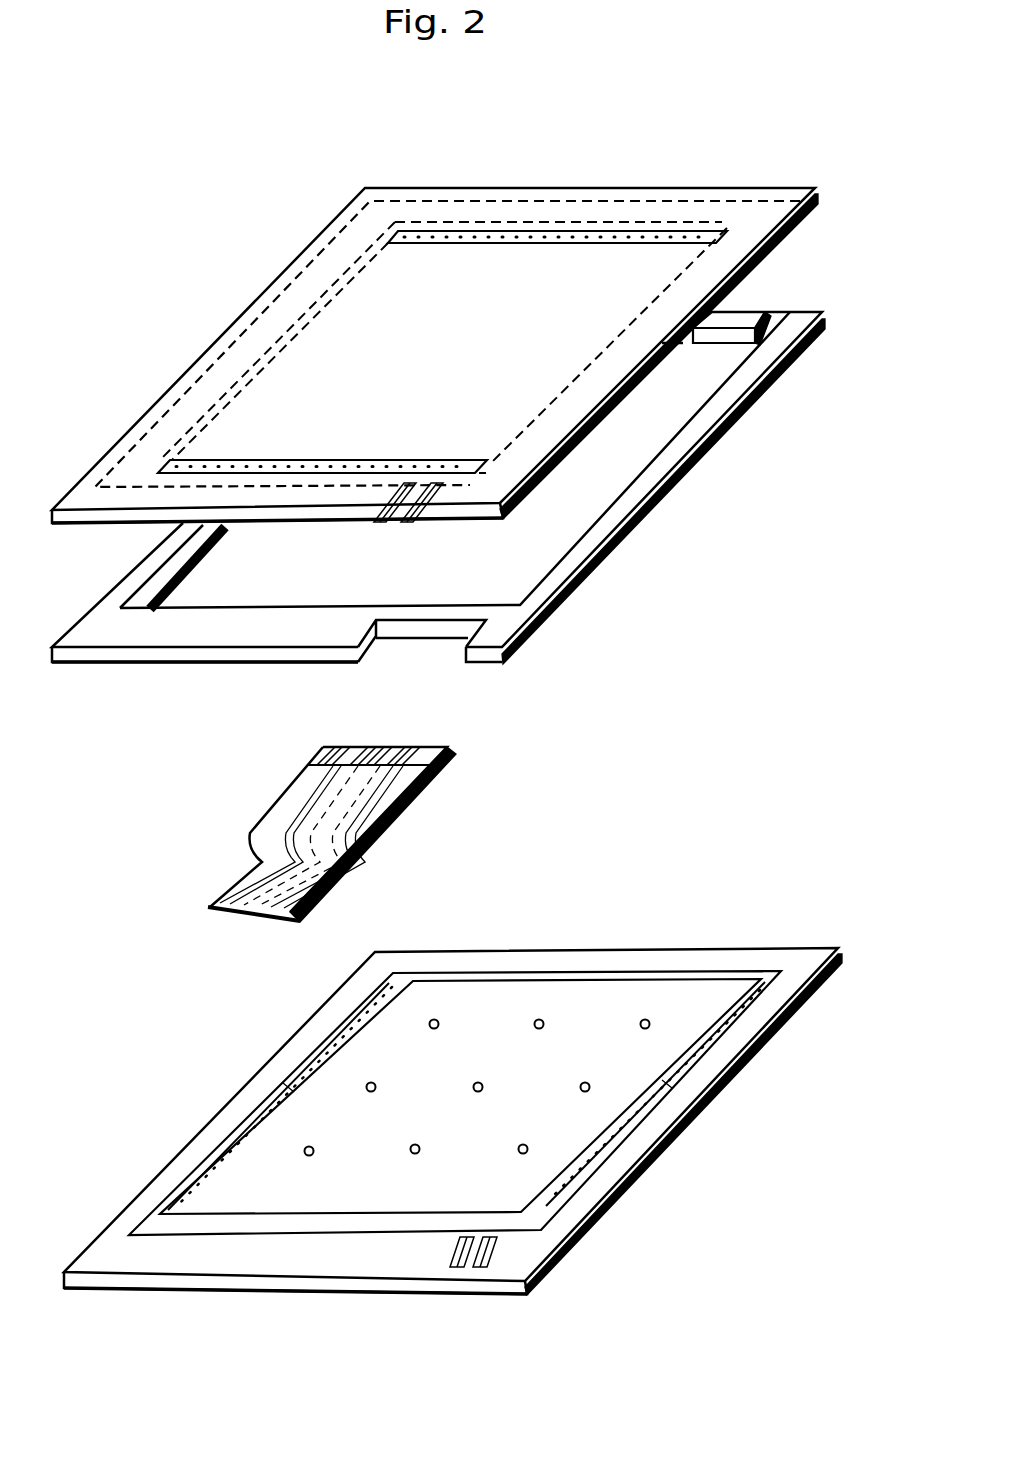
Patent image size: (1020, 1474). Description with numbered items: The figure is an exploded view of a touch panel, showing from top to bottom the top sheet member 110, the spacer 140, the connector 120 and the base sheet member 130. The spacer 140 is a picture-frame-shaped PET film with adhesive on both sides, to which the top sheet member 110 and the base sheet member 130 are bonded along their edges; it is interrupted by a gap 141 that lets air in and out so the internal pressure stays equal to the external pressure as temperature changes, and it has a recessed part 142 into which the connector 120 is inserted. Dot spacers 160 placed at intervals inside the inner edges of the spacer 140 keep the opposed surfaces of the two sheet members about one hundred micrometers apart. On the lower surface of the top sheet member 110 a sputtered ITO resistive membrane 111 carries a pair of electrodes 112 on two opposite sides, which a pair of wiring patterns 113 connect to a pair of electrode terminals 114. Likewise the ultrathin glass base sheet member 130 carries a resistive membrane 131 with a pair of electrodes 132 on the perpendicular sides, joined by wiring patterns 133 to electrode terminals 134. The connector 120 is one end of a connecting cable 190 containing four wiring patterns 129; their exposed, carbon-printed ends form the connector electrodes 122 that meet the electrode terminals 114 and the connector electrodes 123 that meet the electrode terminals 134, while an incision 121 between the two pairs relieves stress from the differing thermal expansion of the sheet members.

The top sheet member 110 is at (814, 189).
The resistive membrane 111 is at (527, 263).
The electrodes 112 is at (603, 233).
The wiring patterns 113 is at (243, 376).
The electrode terminals 114 is at (396, 522).
The connector 120 is at (368, 850).
The incision 121 is at (383, 757).
The connector electrodes 122 is at (326, 753).
The connector electrodes 123 is at (390, 792).
The wiring patterns 129 is at (273, 920).
The base sheet member 130 is at (840, 948).
The resistive membrane 131 is at (544, 999).
The electrodes 132 is at (342, 1023).
The wiring patterns 133 is at (245, 1240).
The electrode terminals 134 is at (478, 1272).
The spacer 140 is at (824, 313).
The gap 141 is at (781, 313).
The recessed part 142 is at (437, 651).
The dot spacers 160 is at (434, 1030).
The connecting cable 190 is at (226, 888).